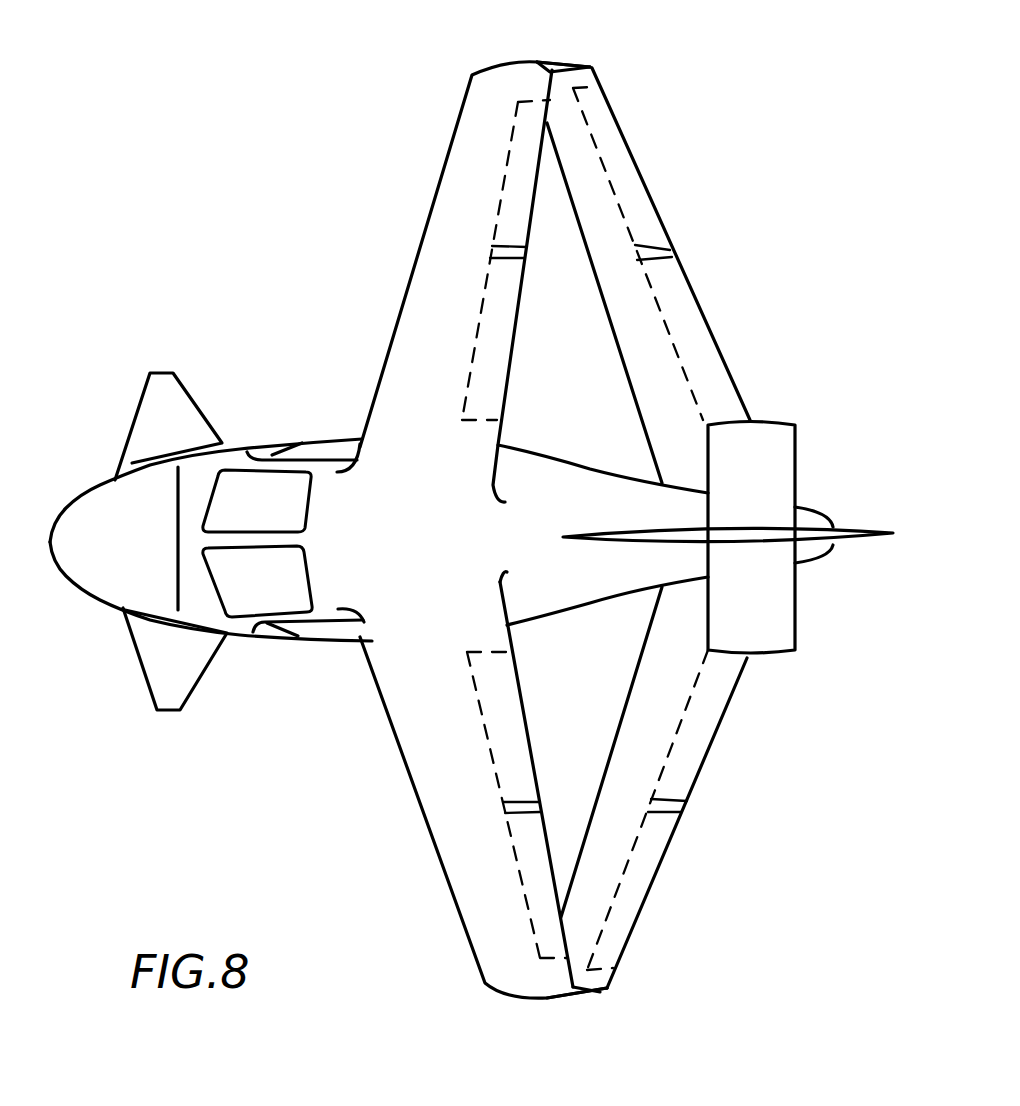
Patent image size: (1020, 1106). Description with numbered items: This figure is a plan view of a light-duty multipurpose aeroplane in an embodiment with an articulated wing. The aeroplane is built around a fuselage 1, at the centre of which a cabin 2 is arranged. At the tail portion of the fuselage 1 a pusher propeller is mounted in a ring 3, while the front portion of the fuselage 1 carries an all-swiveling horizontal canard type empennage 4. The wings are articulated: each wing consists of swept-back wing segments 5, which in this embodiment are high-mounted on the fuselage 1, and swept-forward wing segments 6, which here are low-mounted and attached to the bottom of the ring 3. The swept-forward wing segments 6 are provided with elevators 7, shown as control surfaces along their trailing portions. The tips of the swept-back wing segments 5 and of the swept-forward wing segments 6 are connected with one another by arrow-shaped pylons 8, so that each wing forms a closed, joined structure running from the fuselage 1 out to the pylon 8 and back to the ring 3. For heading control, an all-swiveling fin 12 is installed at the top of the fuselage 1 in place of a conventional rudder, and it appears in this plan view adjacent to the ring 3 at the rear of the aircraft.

The fuselage 1 is at (88, 510).
The cabin 2 is at (282, 483).
The ring 3 is at (780, 623).
The canard type empennage 4 is at (190, 660).
The swept-back wing segments 5 is at (428, 775).
The swept-forward wing segments 6 is at (597, 890).
The elevators 7 is at (663, 822).
The arrow-shaped pylons 8 is at (562, 58).
The all-swiveling fin 12 is at (837, 530).